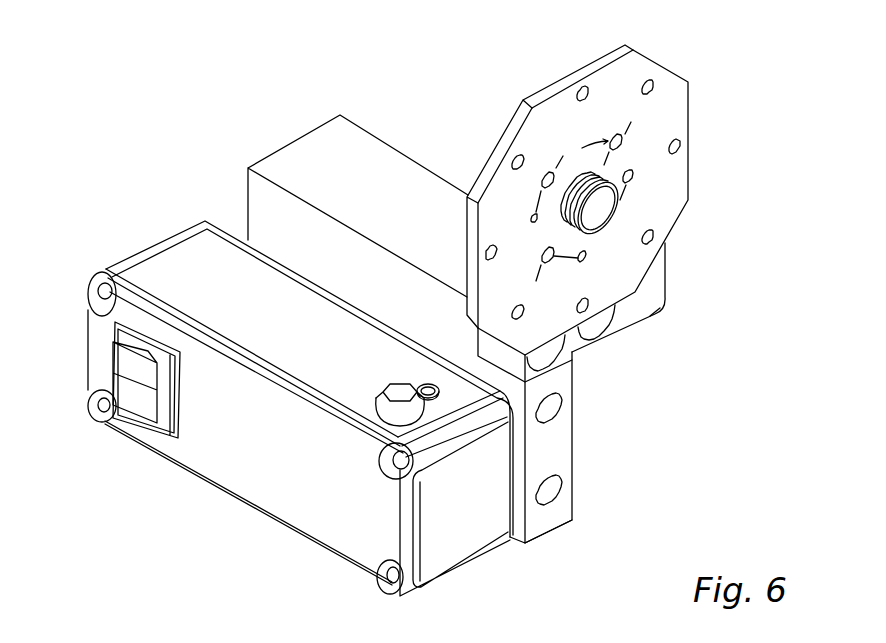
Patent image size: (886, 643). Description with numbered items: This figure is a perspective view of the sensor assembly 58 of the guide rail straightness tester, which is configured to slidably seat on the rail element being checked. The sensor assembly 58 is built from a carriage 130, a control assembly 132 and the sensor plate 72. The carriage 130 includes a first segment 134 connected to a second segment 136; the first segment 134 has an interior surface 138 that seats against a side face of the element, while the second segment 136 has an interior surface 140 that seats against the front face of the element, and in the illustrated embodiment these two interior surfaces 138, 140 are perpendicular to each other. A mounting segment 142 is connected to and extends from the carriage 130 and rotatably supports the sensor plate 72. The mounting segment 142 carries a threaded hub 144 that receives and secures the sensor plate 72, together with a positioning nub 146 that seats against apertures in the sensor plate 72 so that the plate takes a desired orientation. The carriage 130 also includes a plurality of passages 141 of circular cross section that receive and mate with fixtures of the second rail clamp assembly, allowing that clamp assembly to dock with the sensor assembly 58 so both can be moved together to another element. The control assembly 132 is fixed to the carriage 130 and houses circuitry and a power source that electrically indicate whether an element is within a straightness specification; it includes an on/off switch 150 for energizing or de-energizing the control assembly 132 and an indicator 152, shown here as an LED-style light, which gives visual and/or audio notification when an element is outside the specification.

The sensor assembly 58 is at (107, 52).
The sensor plate 72 is at (637, 45).
The carriage 130 is at (338, 115).
The control assembly 132 is at (265, 522).
The first segment 134 is at (572, 510).
The second segment 136 is at (643, 313).
The interior surface 138 is at (572, 472).
The interior surface 140 is at (603, 343).
The passages 141 is at (548, 468).
The mounting segment 142 is at (670, 263).
The threaded hub 144 is at (640, 200).
The positioning nub 146 is at (578, 350).
The on/off switch 150 is at (126, 430).
The indicator 152 is at (382, 392).